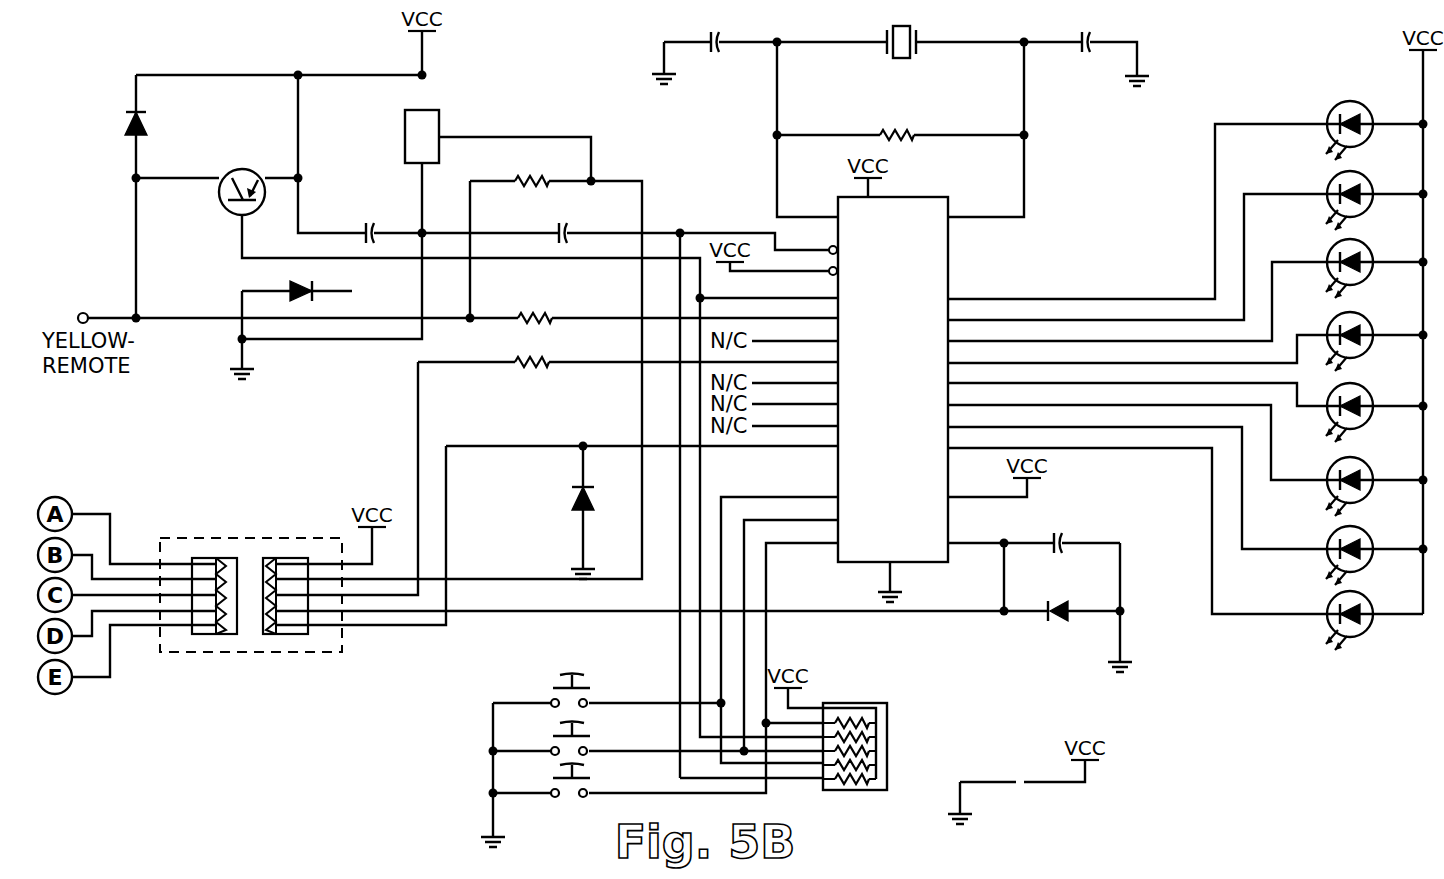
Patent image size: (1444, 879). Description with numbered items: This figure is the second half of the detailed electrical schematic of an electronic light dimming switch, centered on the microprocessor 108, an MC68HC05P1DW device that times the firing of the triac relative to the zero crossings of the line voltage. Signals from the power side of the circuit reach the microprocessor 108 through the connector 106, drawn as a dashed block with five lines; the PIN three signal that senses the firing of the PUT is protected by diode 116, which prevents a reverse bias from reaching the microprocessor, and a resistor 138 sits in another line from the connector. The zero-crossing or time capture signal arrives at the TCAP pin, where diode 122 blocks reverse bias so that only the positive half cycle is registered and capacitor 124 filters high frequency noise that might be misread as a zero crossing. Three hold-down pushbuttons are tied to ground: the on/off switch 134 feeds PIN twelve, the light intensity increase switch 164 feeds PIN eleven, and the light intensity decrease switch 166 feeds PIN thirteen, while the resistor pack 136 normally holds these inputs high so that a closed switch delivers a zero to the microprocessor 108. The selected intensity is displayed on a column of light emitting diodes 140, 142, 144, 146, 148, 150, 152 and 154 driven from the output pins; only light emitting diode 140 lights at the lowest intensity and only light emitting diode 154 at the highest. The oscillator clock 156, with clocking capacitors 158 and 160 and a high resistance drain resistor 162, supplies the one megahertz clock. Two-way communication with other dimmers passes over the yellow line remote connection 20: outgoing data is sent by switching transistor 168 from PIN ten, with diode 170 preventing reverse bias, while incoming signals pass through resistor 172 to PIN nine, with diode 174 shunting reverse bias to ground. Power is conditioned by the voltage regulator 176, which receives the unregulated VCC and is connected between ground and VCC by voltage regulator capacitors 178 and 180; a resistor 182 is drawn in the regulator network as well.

The yellow line remote connection 20 is at (87, 312).
The connector 106 is at (223, 538).
The microprocessor 108 is at (868, 396).
The diode 116 is at (572, 505).
The diode 122 is at (1052, 625).
The capacitor 124 is at (1065, 540).
The on/off switch 134 is at (580, 737).
The resistor pack 136 is at (887, 739).
The resistor 138 is at (532, 368).
The light emitting diode 140 is at (1362, 633).
The light emitting diode 142 is at (1362, 568).
The light emitting diode 144 is at (1362, 499).
The light emitting diode 146 is at (1362, 425).
The light emitting diode 148 is at (1358, 312).
The light emitting diode 150 is at (1358, 241).
The light emitting diode 152 is at (1358, 173).
The light emitting diode 154 is at (1358, 103).
The oscillator clock 156 is at (891, 26).
The clocking capacitor 158 is at (713, 53).
The clocking capacitor 160 is at (1088, 53).
The resistor 162 is at (896, 130).
The light intensity increase switch 164 is at (580, 689).
The light intensity decrease switch 166 is at (580, 779).
The transistor 168 is at (242, 169).
The diode 170 is at (128, 122).
The resistor 172 is at (532, 312).
The diode 174 is at (292, 286).
The voltage regulator 176 is at (405, 137).
The voltage regulator capacitor 178 is at (378, 228).
The voltage regulator capacitor 180 is at (560, 228).
The resistor 182 is at (532, 176).